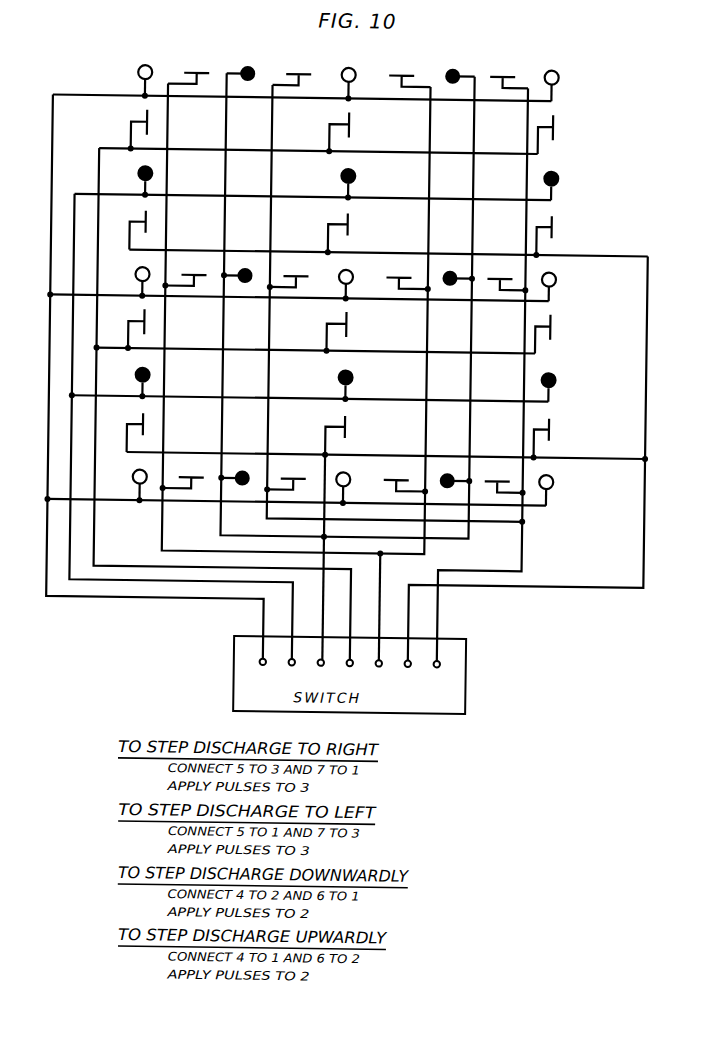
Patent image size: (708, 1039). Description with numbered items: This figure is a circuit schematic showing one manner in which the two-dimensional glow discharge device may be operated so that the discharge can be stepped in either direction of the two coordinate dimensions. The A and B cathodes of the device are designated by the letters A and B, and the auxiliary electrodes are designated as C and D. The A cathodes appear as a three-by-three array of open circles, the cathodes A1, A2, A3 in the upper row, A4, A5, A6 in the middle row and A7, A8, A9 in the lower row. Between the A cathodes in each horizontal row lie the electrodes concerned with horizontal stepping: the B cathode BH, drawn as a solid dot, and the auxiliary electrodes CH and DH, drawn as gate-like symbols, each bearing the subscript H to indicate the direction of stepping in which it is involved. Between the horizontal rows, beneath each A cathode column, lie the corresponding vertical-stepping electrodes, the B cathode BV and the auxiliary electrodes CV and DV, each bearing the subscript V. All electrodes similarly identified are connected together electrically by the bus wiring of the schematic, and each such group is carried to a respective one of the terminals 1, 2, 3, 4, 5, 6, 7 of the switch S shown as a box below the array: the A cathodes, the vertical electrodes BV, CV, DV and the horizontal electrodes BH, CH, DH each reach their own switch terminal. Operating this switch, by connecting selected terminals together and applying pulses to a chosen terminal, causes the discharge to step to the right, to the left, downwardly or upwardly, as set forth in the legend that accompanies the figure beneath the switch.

The A cathode A1 is at (142, 72).
The A cathode A2 is at (346, 75).
The A cathode A3 is at (549, 78).
The A cathode A4 is at (140, 273).
The A cathode A5 is at (344, 276).
The A cathode A6 is at (547, 279).
The A cathode A7 is at (137, 476).
The A cathode A8 is at (341, 479).
The A cathode A9 is at (544, 482).
The B cathode for horizontal stepping BH is at (348, 268).
The C auxiliary electrode for horizontal stepping CH is at (297, 271).
The D auxiliary electrode for horizontal stepping DH is at (397, 272).
The B cathode for vertical stepping BV is at (354, 278).
The C auxiliary electrode for vertical stepping CV is at (350, 231).
The D auxiliary electrode for vertical stepping DV is at (350, 333).
The switch terminal 1 is at (262, 672).
The switch terminal 2 is at (291, 672).
The switch terminal 3 is at (320, 672).
The switch terminal 4 is at (349, 673).
The switch terminal 5 is at (378, 673).
The switch terminal 6 is at (407, 674).
The switch terminal 7 is at (436, 674).